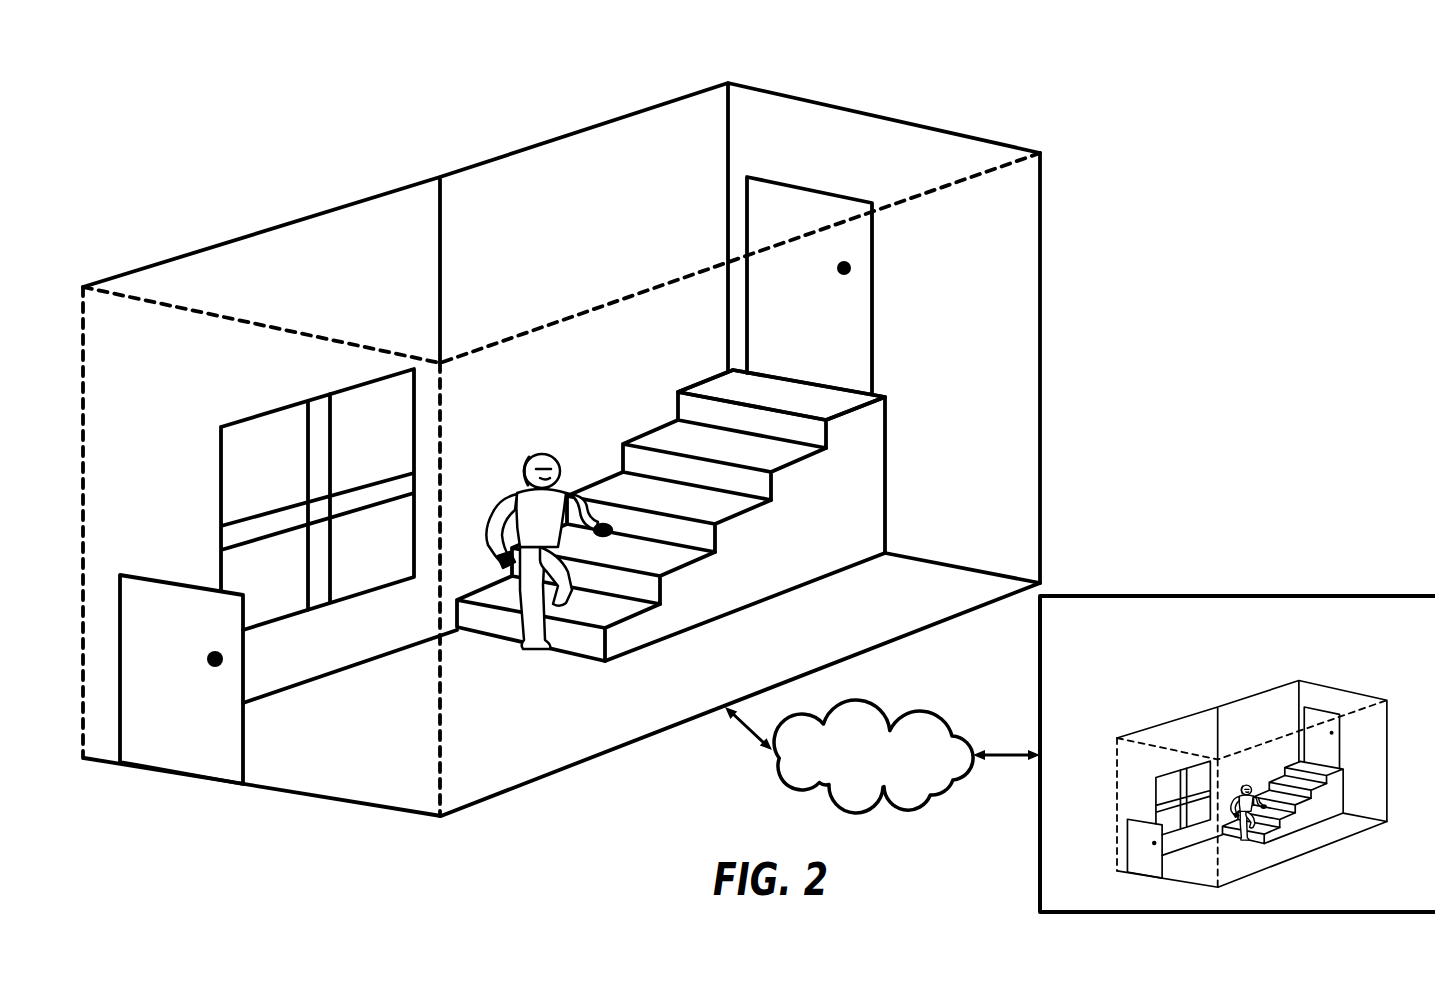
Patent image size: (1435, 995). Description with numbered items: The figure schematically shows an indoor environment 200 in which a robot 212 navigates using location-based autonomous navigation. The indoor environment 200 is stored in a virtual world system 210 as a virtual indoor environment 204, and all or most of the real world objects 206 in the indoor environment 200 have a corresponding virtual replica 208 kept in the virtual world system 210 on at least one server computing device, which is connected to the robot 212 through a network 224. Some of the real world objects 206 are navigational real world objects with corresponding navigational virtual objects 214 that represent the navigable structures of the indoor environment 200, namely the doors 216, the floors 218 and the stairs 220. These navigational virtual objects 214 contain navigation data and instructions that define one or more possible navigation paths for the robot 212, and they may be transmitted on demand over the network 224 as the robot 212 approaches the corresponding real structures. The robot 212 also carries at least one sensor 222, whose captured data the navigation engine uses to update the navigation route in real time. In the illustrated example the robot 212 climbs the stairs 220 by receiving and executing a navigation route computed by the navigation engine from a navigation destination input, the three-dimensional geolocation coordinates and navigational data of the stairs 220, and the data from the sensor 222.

The indoor environment 200 is at (179, 46).
The virtual indoor environment 204 is at (1273, 763).
The real world objects 206 is at (478, 330).
The virtual replica 208 is at (1243, 719).
The virtual world system 210 is at (1253, 587).
The robot 212 is at (537, 455).
The navigational virtual objects 214 is at (623, 414).
The doors 216 is at (822, 192).
The floors 218 is at (363, 755).
The stairs 220 is at (817, 415).
The sensor 222 is at (552, 457).
The network 224 is at (953, 730).